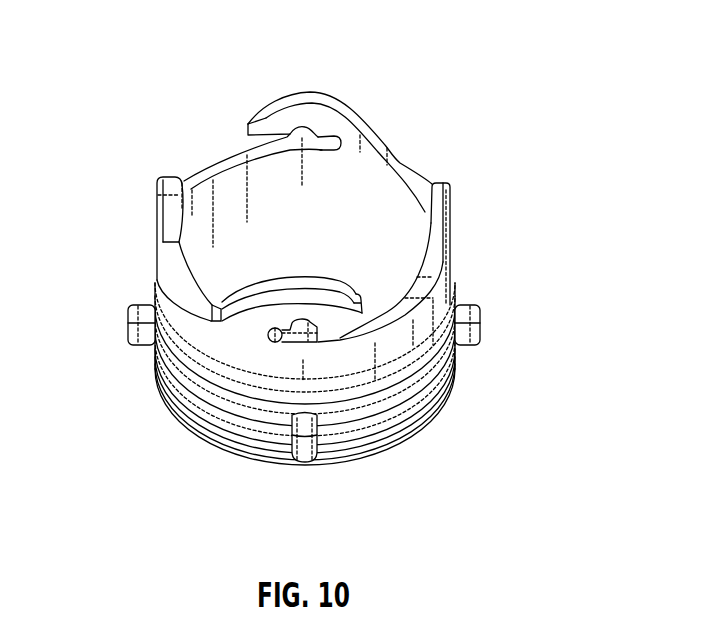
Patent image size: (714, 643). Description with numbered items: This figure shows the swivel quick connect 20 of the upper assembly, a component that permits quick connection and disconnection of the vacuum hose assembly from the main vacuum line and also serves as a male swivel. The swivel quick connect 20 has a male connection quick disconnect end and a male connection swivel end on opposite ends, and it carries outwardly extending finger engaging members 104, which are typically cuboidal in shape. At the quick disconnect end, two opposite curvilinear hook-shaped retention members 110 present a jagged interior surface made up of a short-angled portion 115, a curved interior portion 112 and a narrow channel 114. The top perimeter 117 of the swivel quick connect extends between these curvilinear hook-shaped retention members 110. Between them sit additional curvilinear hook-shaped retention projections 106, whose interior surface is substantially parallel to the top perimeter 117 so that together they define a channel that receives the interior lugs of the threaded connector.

The swivel quick connect 20 is at (527, 29).
The outwardly extending finger engaging member 104 is at (128, 323).
The curvilinear hook-shaped retention projection 106 is at (166, 188).
The curvilinear hook-shaped retention member 110 is at (332, 94).
The curved interior portion 112 is at (306, 126).
The narrow channel 114 is at (334, 138).
The short-angled portion 115 is at (264, 132).
The top perimeter 117 is at (217, 168).